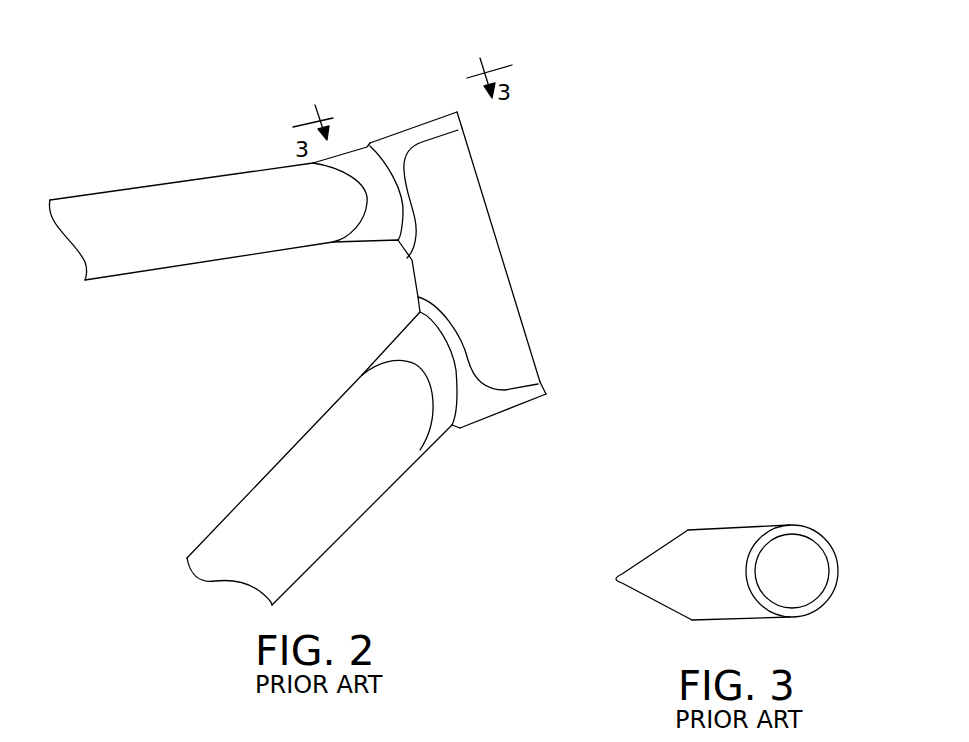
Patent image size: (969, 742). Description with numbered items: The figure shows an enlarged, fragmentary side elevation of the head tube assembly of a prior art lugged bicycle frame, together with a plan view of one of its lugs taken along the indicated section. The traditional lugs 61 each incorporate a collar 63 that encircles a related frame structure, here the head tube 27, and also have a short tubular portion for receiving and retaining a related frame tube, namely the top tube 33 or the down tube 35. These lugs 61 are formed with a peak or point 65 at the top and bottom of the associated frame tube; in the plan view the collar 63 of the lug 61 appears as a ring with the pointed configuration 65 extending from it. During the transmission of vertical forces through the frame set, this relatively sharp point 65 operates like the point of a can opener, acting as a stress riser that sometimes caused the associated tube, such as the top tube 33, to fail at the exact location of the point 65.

In FIG. 2, the head tube 27 is at (497, 242).
In FIG. 2, the top tube 33 is at (167, 183).
In FIG. 2, the down tube 35 is at (263, 480).
In FIG. 2, the lug 61 is at (380, 243).
In FIG. 3, the lug 61 is at (740, 622).
In FIG. 2, the collar 63 is at (460, 118).
In FIG. 3, the collar 63 is at (827, 590).
In FIG. 2, the point 65 is at (317, 158).
In FIG. 3, the point 65 is at (622, 573).